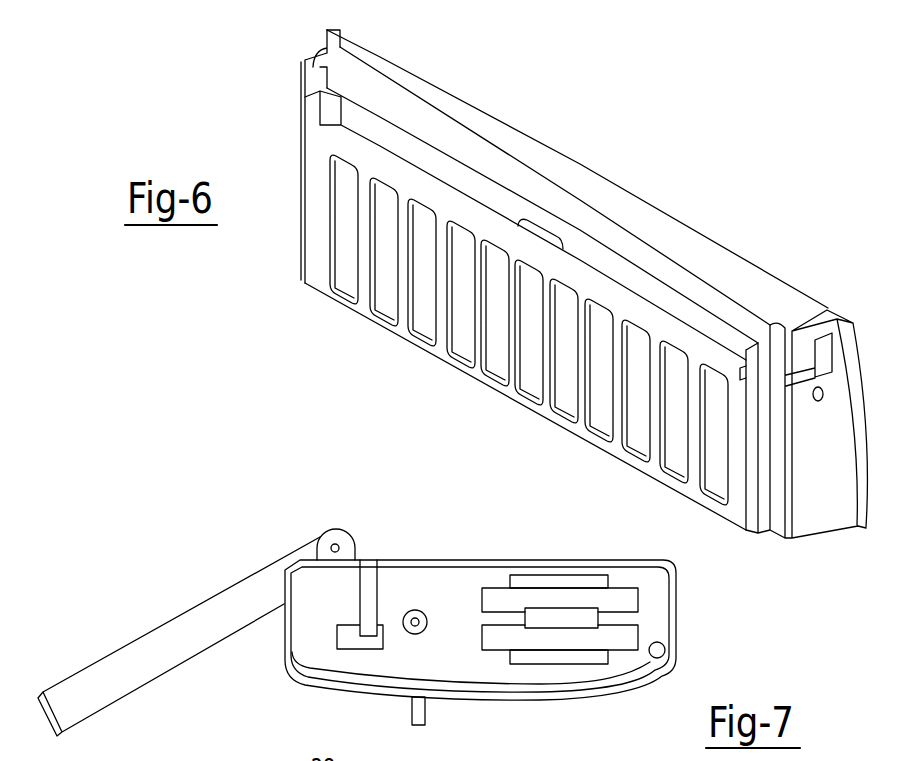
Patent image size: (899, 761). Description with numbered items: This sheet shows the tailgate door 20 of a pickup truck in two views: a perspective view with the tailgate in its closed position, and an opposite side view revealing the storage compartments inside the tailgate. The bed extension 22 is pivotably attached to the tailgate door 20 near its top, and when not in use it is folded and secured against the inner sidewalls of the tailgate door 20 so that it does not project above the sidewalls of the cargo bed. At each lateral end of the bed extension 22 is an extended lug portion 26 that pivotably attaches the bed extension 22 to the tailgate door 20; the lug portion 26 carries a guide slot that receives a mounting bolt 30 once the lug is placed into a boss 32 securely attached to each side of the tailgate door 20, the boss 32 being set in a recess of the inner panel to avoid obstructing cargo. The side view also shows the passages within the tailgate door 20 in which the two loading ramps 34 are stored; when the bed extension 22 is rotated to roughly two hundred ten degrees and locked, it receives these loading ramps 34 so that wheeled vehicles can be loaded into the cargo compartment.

In FIG. 6, the tailgate door 20 is at (600, 173).
In FIG. 7, the tailgate door 20 is at (338, 690).
In FIG. 6, the bed extension 22 is at (416, 343).
In FIG. 7, the bed extension 22 is at (163, 622).
In FIG. 6, the extended lug portion 26 is at (302, 110).
In FIG. 7, the extended lug portion 26 is at (326, 531).
In FIG. 7, the mounting bolt 30 is at (339, 545).
In FIG. 7, the boss 32 is at (357, 550).
In FIG. 7, the loading ramps 34 is at (625, 637).